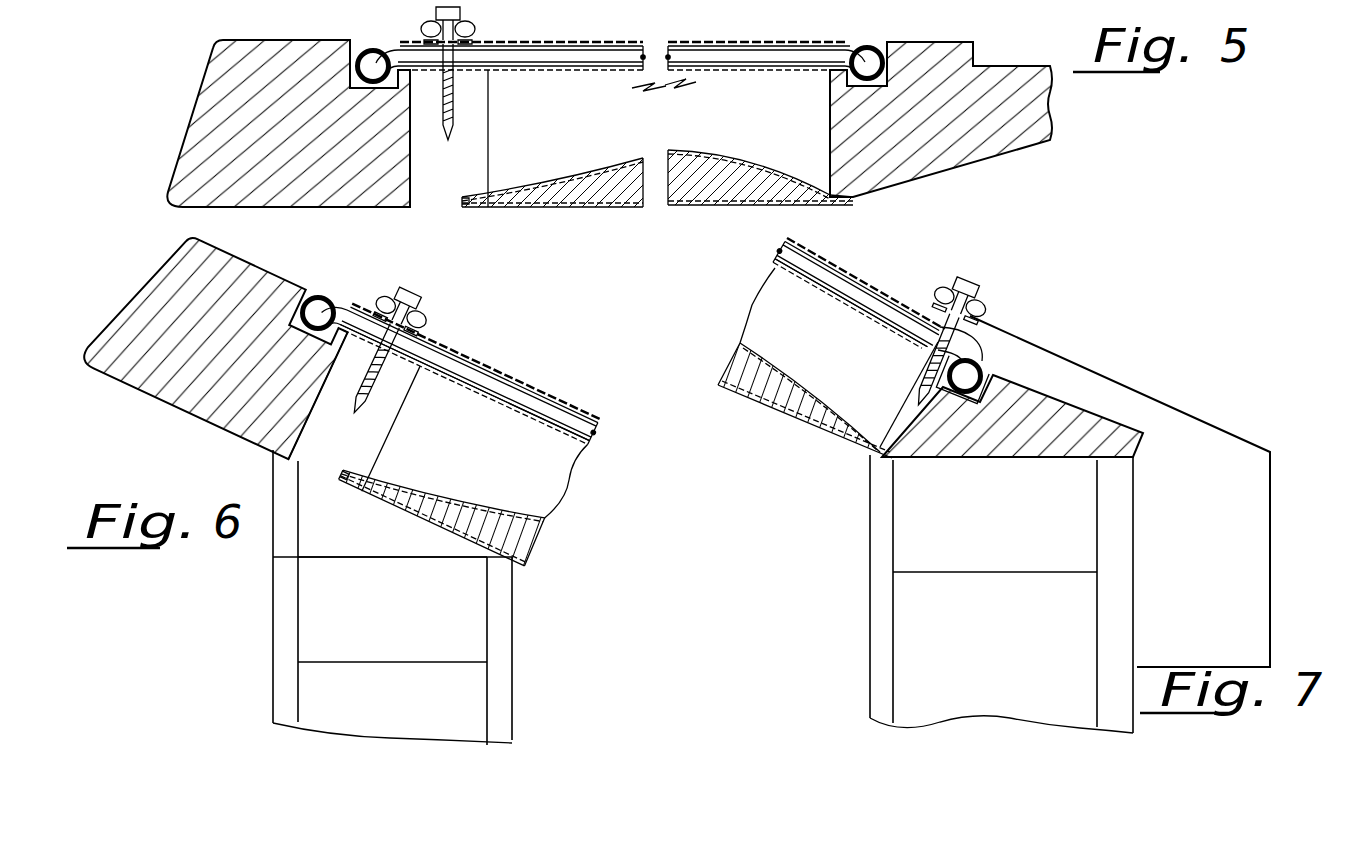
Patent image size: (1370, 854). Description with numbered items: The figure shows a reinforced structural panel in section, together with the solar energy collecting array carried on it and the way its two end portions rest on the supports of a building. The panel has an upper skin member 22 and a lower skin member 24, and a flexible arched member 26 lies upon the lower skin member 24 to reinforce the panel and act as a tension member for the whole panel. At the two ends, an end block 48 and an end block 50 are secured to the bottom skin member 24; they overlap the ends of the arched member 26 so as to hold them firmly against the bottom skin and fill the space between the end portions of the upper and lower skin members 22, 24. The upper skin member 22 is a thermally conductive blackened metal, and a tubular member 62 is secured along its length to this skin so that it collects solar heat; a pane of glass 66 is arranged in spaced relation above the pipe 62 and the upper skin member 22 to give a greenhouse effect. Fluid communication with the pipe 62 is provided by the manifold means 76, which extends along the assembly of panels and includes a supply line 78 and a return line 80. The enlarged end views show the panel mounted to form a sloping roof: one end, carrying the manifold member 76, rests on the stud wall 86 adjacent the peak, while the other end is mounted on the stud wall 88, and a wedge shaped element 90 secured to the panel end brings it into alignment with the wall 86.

In FIG. 6, the upper skin member 22 is at (516, 418).
In FIG. 7, the upper skin member 22 is at (866, 309).
In FIG. 5, the lower skin member 24 is at (721, 207).
In FIG. 6, the lower skin member 24 is at (471, 536).
In FIG. 7, the lower skin member 24 is at (808, 422).
In FIG. 5, the arched member 26 is at (717, 164).
In FIG. 6, the arched member 26 is at (500, 500).
In FIG. 7, the arched member 26 is at (800, 391).
In FIG. 5, the end block 48 is at (477, 155).
In FIG. 6, the end block 48 is at (384, 442).
In FIG. 5, the end block 50 is at (836, 112).
In FIG. 7, the end block 50 is at (1048, 431).
In FIG. 5, the tubular member 62 is at (718, 45).
In FIG. 6, the tubular member 62 is at (560, 407).
In FIG. 7, the tubular member 62 is at (860, 282).
In FIG. 5, the pane of glass 66 is at (588, 41).
In FIG. 6, the pane of glass 66 is at (483, 366).
In FIG. 7, the pane of glass 66 is at (820, 256).
In FIG. 5, the manifold means 76 is at (340, 42).
In FIG. 5, the supply line 78 is at (372, 69).
In FIG. 6, the supply line 78 is at (320, 311).
In FIG. 5, the return line 80 is at (868, 58).
In FIG. 7, the return line 80 is at (972, 372).
In FIG. 6, the stud wall 86 is at (514, 652).
In FIG. 7, the stud wall 88 is at (871, 528).
In FIG. 6, the wedge shaped element 90 is at (347, 547).